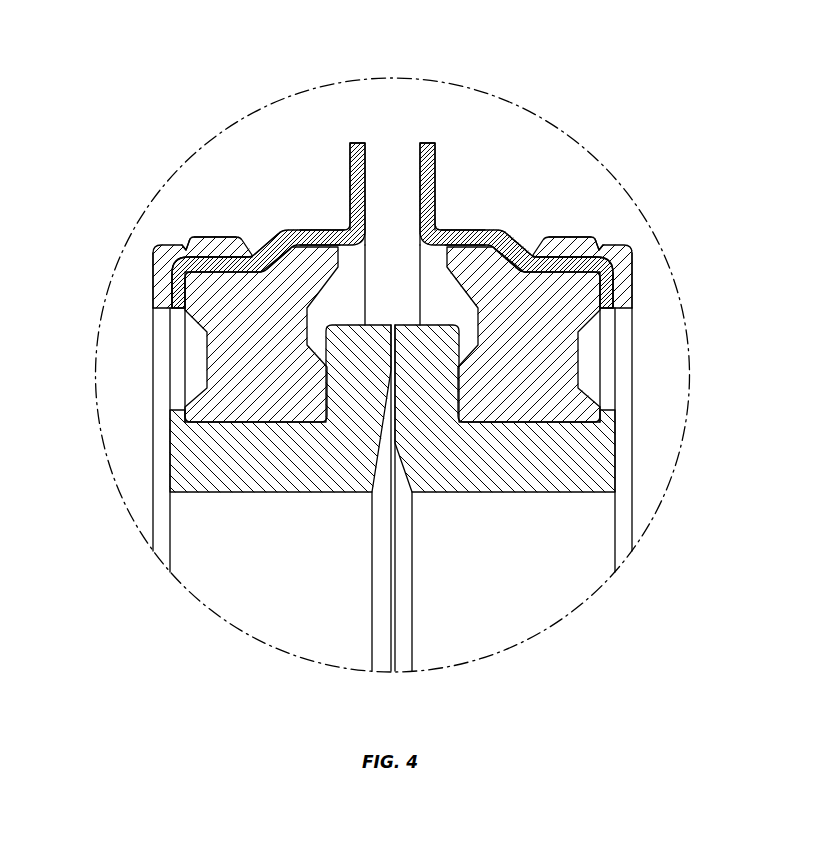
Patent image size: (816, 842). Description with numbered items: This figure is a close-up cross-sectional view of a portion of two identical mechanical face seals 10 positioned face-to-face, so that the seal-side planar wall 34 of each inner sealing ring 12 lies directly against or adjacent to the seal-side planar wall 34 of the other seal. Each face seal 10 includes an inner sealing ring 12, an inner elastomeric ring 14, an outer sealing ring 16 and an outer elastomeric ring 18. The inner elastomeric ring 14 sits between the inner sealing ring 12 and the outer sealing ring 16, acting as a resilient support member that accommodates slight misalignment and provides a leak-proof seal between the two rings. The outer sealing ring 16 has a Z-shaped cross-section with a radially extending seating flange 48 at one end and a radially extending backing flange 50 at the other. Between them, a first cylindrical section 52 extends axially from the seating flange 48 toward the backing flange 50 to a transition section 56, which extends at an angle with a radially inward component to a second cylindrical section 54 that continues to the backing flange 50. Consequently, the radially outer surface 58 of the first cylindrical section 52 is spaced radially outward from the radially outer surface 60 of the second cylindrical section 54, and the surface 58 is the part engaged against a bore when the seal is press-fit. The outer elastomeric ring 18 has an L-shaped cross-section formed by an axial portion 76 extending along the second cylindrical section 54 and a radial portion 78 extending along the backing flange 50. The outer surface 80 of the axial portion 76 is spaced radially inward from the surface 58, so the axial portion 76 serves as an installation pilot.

The mechanical face seal 10 is at (116, 90).
The inner sealing ring 12 is at (288, 476).
The inner elastomeric ring 14 is at (221, 383).
The outer sealing ring 16 is at (346, 177).
The outer elastomeric ring 18 is at (151, 241).
The seal-side planar wall 34 is at (391, 358).
The seating flange 48 is at (356, 150).
The backing flange 50 is at (175, 296).
The first cylindrical section 52 is at (333, 228).
The second cylindrical section 54 is at (233, 258).
The transition section 56 is at (275, 255).
The radially outer surface of the first cylindrical section 58 is at (317, 227).
The radially outer surface of the second cylindrical section 60 is at (187, 250).
The axial portion 76 is at (212, 238).
The radial portion 78 is at (158, 285).
The outer surface of the axial portion 80 is at (220, 237).